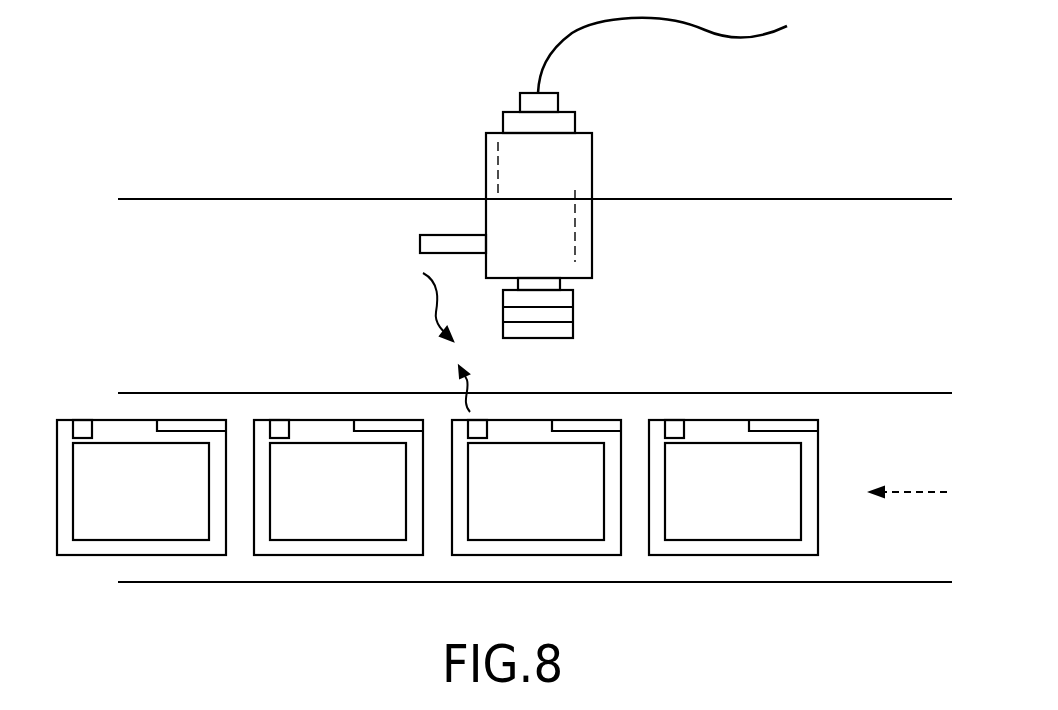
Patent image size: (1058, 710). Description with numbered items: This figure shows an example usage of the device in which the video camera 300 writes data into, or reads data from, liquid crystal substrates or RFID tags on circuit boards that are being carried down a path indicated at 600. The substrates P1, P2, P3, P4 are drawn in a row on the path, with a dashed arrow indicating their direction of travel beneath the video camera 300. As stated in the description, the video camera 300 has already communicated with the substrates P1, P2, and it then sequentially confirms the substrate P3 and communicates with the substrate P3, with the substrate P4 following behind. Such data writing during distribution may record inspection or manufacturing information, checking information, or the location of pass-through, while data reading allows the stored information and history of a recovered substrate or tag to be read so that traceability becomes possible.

The video camera 300 is at (592, 163).
The conveyor 600 is at (710, 393).
The substrate P1 is at (141, 487).
The substrate P2 is at (338, 487).
The substrate P3 is at (536, 487).
The pallet P4 is at (733, 487).